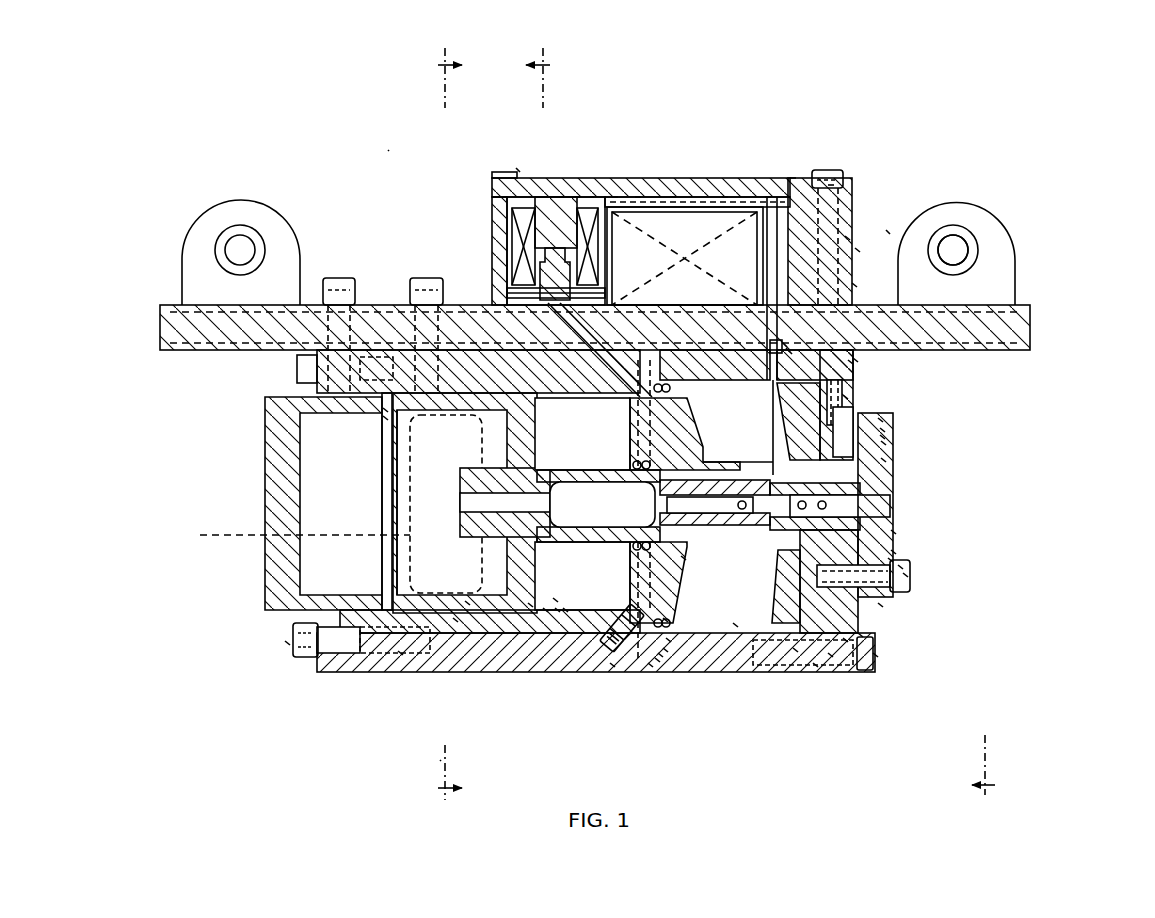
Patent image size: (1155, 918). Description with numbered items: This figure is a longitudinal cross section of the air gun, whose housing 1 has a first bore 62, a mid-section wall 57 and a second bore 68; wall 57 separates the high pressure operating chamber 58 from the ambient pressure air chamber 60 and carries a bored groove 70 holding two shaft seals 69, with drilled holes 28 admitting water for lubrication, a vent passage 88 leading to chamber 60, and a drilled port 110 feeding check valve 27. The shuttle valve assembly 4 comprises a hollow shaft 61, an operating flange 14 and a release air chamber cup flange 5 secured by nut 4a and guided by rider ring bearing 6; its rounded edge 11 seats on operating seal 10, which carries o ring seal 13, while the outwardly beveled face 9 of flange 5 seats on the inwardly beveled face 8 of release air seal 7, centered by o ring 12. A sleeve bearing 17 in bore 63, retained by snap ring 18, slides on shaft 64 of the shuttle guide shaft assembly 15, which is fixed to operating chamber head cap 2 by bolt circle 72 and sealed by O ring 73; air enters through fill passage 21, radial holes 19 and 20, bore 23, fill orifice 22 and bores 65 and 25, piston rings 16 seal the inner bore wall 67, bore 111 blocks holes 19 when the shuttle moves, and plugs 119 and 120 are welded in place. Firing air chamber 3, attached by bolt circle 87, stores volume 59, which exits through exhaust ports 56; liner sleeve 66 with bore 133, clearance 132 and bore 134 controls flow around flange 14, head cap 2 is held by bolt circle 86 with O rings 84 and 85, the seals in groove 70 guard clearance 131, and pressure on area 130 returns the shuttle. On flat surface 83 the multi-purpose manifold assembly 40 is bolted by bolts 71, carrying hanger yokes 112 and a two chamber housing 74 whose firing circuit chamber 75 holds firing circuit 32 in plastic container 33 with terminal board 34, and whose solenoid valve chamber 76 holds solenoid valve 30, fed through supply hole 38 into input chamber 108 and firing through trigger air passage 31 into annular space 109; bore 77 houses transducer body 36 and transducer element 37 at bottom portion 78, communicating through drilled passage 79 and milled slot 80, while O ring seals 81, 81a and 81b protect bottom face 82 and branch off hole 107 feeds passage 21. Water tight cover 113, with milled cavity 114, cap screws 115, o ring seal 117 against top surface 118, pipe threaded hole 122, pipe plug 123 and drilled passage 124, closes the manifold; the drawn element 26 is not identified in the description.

The air gun housing 1 is at (440, 760).
The operating chamber head cap 2 is at (870, 618).
The firing air chamber 3 is at (170, 485).
The shuttle valve assembly 4 is at (587, 768).
The nut 4a is at (316, 648).
The release air chamber cup flange 5 is at (530, 605).
The split plastic rider ring bearing 6 is at (455, 620).
The release air seal 7 is at (385, 418).
The inwardly beveled sealing face 8 is at (385, 410).
The outwardly beveled sealing face 9 is at (385, 424).
The operating seal 10 is at (665, 650).
The rounded outside diameter edge 11 is at (668, 640).
The o ring 12 is at (375, 394).
The o ring seal 13 is at (657, 660).
The operating flange 14 is at (665, 620).
The shuttle guide shaft assembly 15 is at (893, 532).
The piston rings 16 is at (795, 650).
The sleeve bearing 17 is at (830, 655).
The snap ring 18 is at (845, 640).
The radial holes 19 is at (875, 655).
The radial holes 20 is at (893, 552).
The gun fill passage 21 is at (846, 397).
The fill orifice 22 is at (660, 507).
The bore 23 is at (815, 665).
The drilled air passage 25 is at (400, 653).
The hub 26 is at (459, 502).
The check valve 27 is at (612, 665).
The drilled holes 28 is at (650, 665).
The solenoid valve 30 is at (572, 192).
The trigger air passage 31 is at (593, 343).
The firing circuit 32 is at (708, 195).
The plastic container 33 is at (638, 193).
The soldering terminal board 34 is at (673, 193).
The transducer body 36 is at (848, 238).
The piezo electric transducer element 37 is at (792, 342).
The trigger valve high pressure air supply hole 38 is at (684, 258).
The multi-purpose manifold assembly 40 is at (388, 150).
The exhaust ports 56 is at (289, 532).
The wall 57 is at (627, 427).
The operating chamber 58 is at (860, 487).
The firing air volume 59 is at (320, 505).
The ambient pressure air chamber 60 is at (557, 610).
The hollow shaft 61 is at (555, 600).
The first bore 62 is at (495, 413).
The bore 63 is at (905, 585).
The shaft 64 is at (905, 575).
The shuttle bore 65 is at (545, 610).
The liner sleeve 66 is at (735, 625).
The inner bore wall 67 is at (467, 603).
The second bore 68 is at (883, 443).
The shaft seals 69 is at (683, 558).
The bored groove 70 is at (633, 461).
The bolts 71 is at (333, 280).
The bolt circle 72 is at (890, 560).
The O ring seal 73 is at (900, 567).
The two chamber housing 74 is at (888, 232).
The firing circuit chamber 75 is at (725, 193).
The solenoid valve chamber 76 is at (518, 168).
The bore 77 is at (768, 193).
The bottom portion 78 is at (785, 345).
The drilled passage 79 is at (793, 355).
The milled slot 80 is at (835, 383).
The O ring seal 81 is at (858, 250).
The O ring seal 81a is at (855, 285).
The O ring seal 81b is at (788, 350).
The bottom face 82 is at (856, 360).
The flat surface 83 is at (719, 352).
The O ring seal 84 is at (851, 362).
The O ring seal 85 is at (882, 430).
The bolt circle 86 is at (860, 635).
The bolt circle 87 is at (289, 645).
The vent passage 88 is at (660, 655).
The branch off hole 107 is at (790, 352).
The trigger valve air input chamber 108 is at (502, 264).
The annular space 109 is at (688, 405).
The drilled port 110 is at (630, 615).
The bore 111 is at (880, 605).
The hanger yokes 112 is at (185, 212).
The water tight cover 113 is at (732, 98).
The milled cavity 114 is at (795, 180).
The cap screws 115 is at (495, 176).
The o ring seal 117 is at (492, 195).
The top surface 118 is at (832, 186).
The plug 119 is at (870, 413).
The plug 120 is at (615, 193).
The pipe threaded hole 122 is at (578, 192).
The pipe plug 123 is at (563, 192).
The drilled passage 124 is at (592, 192).
The area 130 is at (565, 610).
The clearance 131 is at (617, 483).
The clearance 132 is at (883, 460).
The bore 133 is at (882, 437).
The bore 134 is at (880, 420).